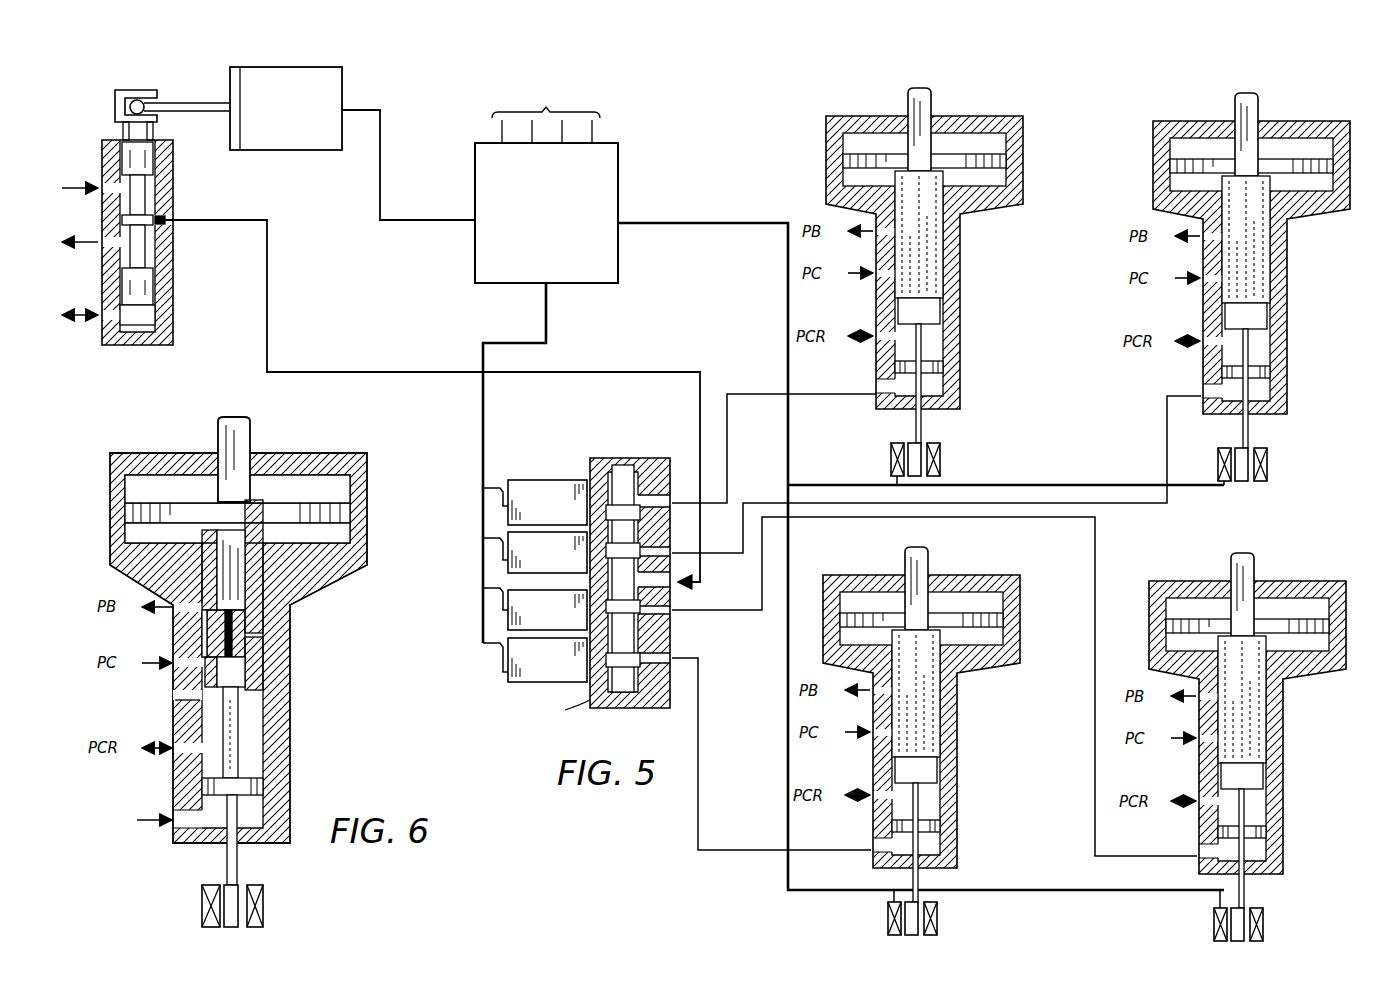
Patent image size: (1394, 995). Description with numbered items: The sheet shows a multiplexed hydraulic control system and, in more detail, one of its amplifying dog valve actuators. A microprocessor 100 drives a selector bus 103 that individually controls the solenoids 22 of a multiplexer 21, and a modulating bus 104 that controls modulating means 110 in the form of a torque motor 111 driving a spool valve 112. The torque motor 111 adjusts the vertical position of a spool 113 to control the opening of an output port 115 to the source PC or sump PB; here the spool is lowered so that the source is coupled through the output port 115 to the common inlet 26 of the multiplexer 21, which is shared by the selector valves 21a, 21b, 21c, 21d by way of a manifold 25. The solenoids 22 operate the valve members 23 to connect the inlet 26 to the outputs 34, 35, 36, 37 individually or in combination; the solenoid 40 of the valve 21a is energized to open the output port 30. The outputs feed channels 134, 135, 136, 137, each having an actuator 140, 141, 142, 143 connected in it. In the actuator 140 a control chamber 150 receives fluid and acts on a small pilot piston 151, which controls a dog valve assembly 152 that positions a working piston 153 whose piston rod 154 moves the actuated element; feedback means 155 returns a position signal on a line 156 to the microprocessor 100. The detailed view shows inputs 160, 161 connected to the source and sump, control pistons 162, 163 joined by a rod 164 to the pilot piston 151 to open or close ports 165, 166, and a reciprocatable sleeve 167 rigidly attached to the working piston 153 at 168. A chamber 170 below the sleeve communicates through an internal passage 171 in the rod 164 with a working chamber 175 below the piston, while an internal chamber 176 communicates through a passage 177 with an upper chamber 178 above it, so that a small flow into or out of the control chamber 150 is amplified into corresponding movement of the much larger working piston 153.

In FIG. 5, the microprocessor 100 is at (618, 167).
In FIG. 5, the selector bus 103 is at (546, 333).
In FIG. 5, the modulating bus 104 is at (380, 163).
In FIG. 5, the modulating means 110 is at (178, 217).
In FIG. 5, the torque motor 111 is at (342, 82).
In FIG. 5, the spool valve 112 is at (165, 292).
In FIG. 5, the spool 113 is at (165, 180).
In FIG. 5, the output port 115 is at (168, 216).
In FIG. 5, the multiplexer 21 is at (567, 565).
In FIG. 5, the solenoid valve 21a is at (476, 511).
In FIG. 5, the solenoid control line b 21b is at (476, 578).
In FIG. 5, the solenoid control line c 21c is at (476, 629).
In FIG. 5, the solenoid control line d 21d is at (500, 673).
In FIG. 5, the solenoids 22 is at (502, 541).
In FIG. 5, the valve members 23 is at (658, 542).
In FIG. 5, the manifold 25 is at (558, 712).
In FIG. 5, the common inlet 26 is at (672, 592).
In FIG. 5, the output port 30 is at (634, 505).
In FIG. 5, the output 34 is at (670, 490).
In FIG. 5, the output 35 is at (670, 543).
In FIG. 5, the output 36 is at (672, 618).
In FIG. 5, the output 37 is at (672, 652).
In FIG. 5, the solenoid 40 is at (560, 480).
In FIG. 5, the channel 134 is at (835, 394).
In FIG. 5, the channel 135 is at (758, 503).
In FIG. 5, the channel 136 is at (762, 620).
In FIG. 5, the channel 137 is at (698, 712).
In FIG. 5, the actuator 140 is at (941, 263).
In FIG. 5, the actuator 141 is at (1310, 310).
In FIG. 5, the actuator 142 is at (1202, 565).
In FIG. 5, the actuator 143 is at (990, 565).
In FIG. 5, the control chamber 150 is at (936, 262).
In FIG. 6, the control chamber 150 is at (215, 820).
In FIG. 5, the pilot piston 151 is at (970, 361).
In FIG. 6, the pilot piston 151 is at (265, 785).
In FIG. 5, the dog valve assembly 152 is at (879, 267).
In FIG. 5, the working piston 153 is at (964, 166).
In FIG. 6, the working piston 153 is at (340, 540).
In FIG. 5, the piston rod 154 is at (957, 127).
In FIG. 5, the feedback means 155 is at (892, 452).
In FIG. 5, the feedback line 156 is at (722, 232).
In FIG. 6, the input 160 is at (200, 690).
In FIG. 6, the input 161 is at (168, 595).
In FIG. 6, the control piston 162 is at (240, 672).
In FIG. 6, the control piston 163 is at (247, 625).
In FIG. 6, the rod 164 is at (240, 688).
In FIG. 6, the port 165 is at (205, 655).
In FIG. 6, the port 166 is at (250, 605).
In FIG. 6, the reciprocatable sleeve 167 is at (185, 705).
In FIG. 6, the attachment point 168 is at (170, 470).
In FIG. 6, the chamber 170 is at (260, 718).
In FIG. 6, the internal passage 171 is at (238, 645).
In FIG. 6, the working chamber 175 is at (330, 560).
In FIG. 6, the internal chamber 176 is at (262, 660).
In FIG. 6, the passage 177 is at (258, 570).
In FIG. 6, the upper chamber 178 is at (335, 492).